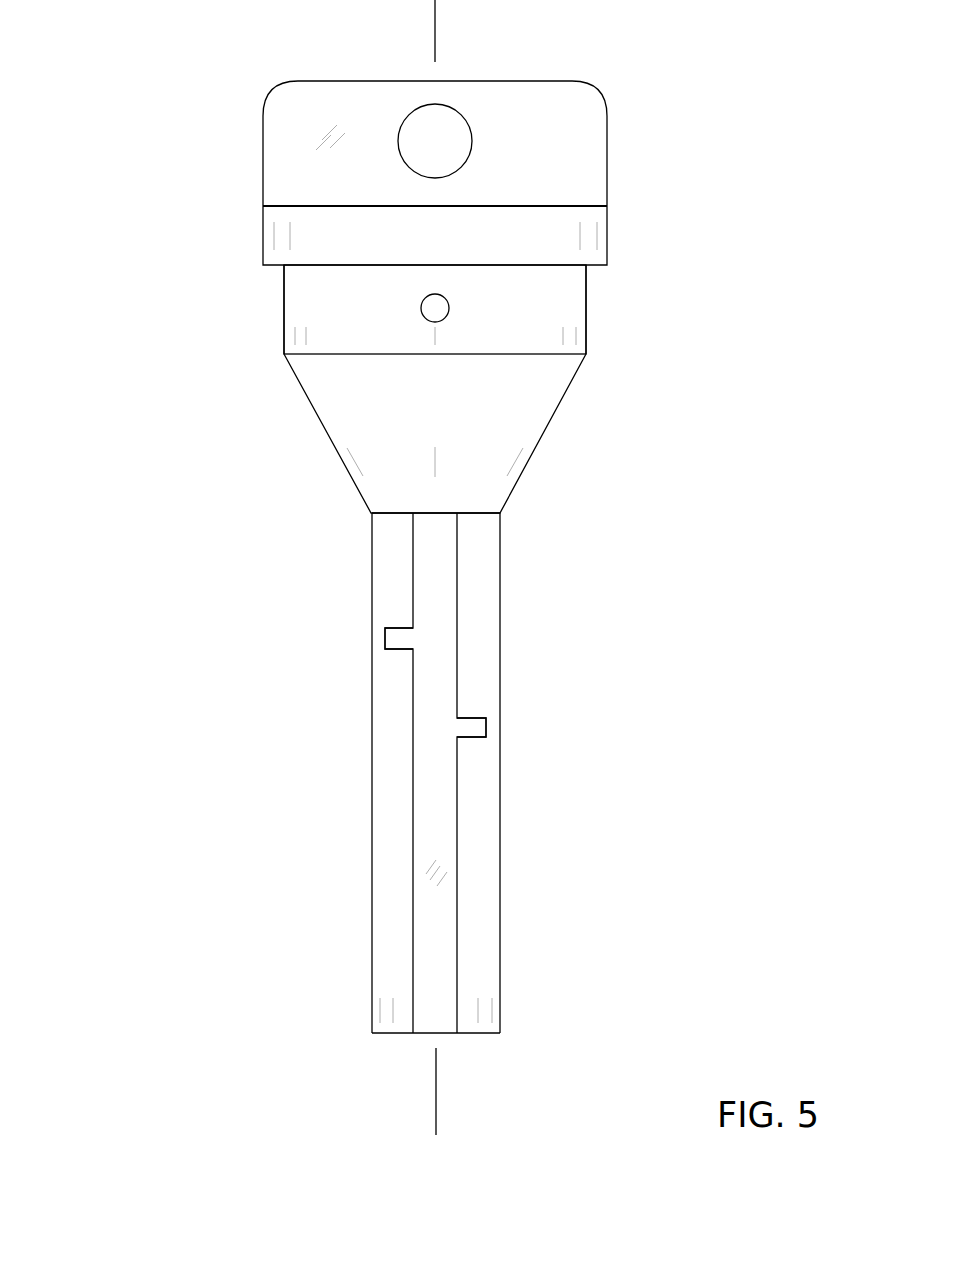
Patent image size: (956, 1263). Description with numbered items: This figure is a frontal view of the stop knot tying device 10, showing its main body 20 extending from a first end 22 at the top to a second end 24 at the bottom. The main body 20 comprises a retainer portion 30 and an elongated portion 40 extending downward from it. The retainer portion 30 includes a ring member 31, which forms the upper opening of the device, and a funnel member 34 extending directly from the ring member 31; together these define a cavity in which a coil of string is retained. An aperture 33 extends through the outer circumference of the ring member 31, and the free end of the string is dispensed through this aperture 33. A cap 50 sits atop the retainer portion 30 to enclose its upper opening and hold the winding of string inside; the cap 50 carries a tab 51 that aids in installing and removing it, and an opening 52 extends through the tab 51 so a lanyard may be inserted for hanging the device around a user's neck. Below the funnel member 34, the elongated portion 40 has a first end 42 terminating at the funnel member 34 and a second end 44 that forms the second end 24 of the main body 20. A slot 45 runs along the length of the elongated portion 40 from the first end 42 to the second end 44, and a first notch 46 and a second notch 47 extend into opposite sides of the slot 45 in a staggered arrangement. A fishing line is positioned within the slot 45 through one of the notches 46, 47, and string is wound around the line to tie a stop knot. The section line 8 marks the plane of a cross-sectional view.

The stop knot tying device 10 is at (147, 88).
The section line 8- 8 is at (424, 18).
The tab 51 is at (607, 137).
The opening 52 is at (468, 120).
The cap 50 is at (607, 236).
The retainer portion 30 is at (270, 310).
The ring member 31 is at (330, 298).
The first end 22 is at (587, 278).
The aperture 33 is at (449, 308).
The funnel member 34 is at (545, 433).
The main body 20 is at (358, 750).
The first end 42 is at (485, 515).
The elongated portion 40 is at (480, 817).
The first notch 46 is at (396, 640).
The second notch 47 is at (475, 729).
The slot 45 is at (437, 928).
The second end 44 is at (500, 1023).
The second end 24 is at (397, 1033).